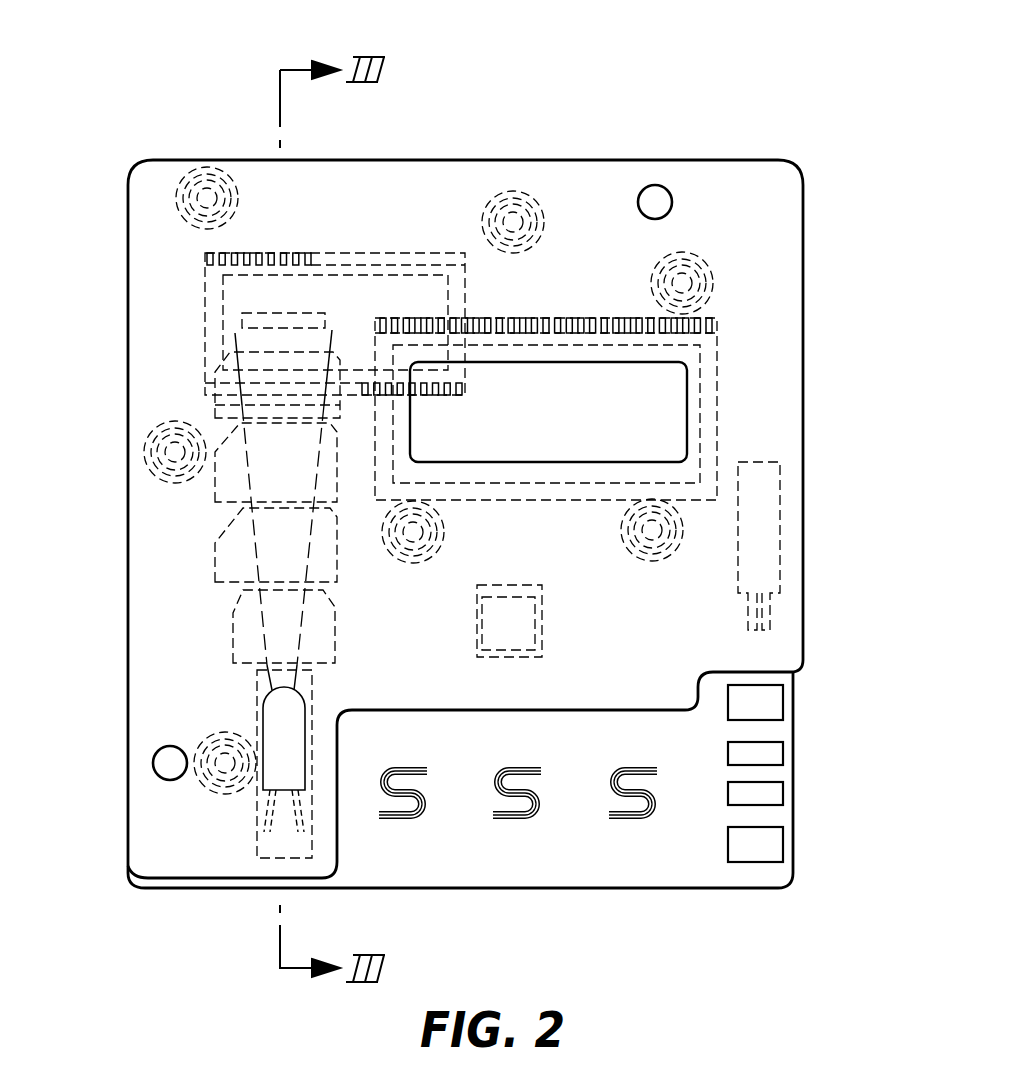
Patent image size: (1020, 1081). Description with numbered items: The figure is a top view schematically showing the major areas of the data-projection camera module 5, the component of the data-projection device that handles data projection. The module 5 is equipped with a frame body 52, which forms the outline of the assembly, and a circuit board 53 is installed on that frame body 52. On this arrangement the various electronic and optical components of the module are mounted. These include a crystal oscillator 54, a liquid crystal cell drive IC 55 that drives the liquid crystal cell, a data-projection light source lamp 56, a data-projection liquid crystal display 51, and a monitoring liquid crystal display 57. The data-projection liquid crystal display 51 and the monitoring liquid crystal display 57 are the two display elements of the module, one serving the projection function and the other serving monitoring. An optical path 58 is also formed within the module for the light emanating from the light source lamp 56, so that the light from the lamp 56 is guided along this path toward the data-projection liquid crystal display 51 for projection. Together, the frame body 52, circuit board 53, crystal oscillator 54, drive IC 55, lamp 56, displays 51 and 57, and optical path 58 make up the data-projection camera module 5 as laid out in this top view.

The data-projection camera module 5 is at (461, 89).
The data-projection liquid crystal display 51 is at (205, 300).
The frame body 52 is at (803, 218).
The circuit board 53 is at (783, 733).
The crystal oscillator 54 is at (780, 494).
The liquid crystal cell drive IC 55 is at (542, 628).
The data-projection light source lamp 56 is at (260, 703).
The monitoring liquid crystal display 57 is at (718, 356).
The optical path 58 is at (263, 605).